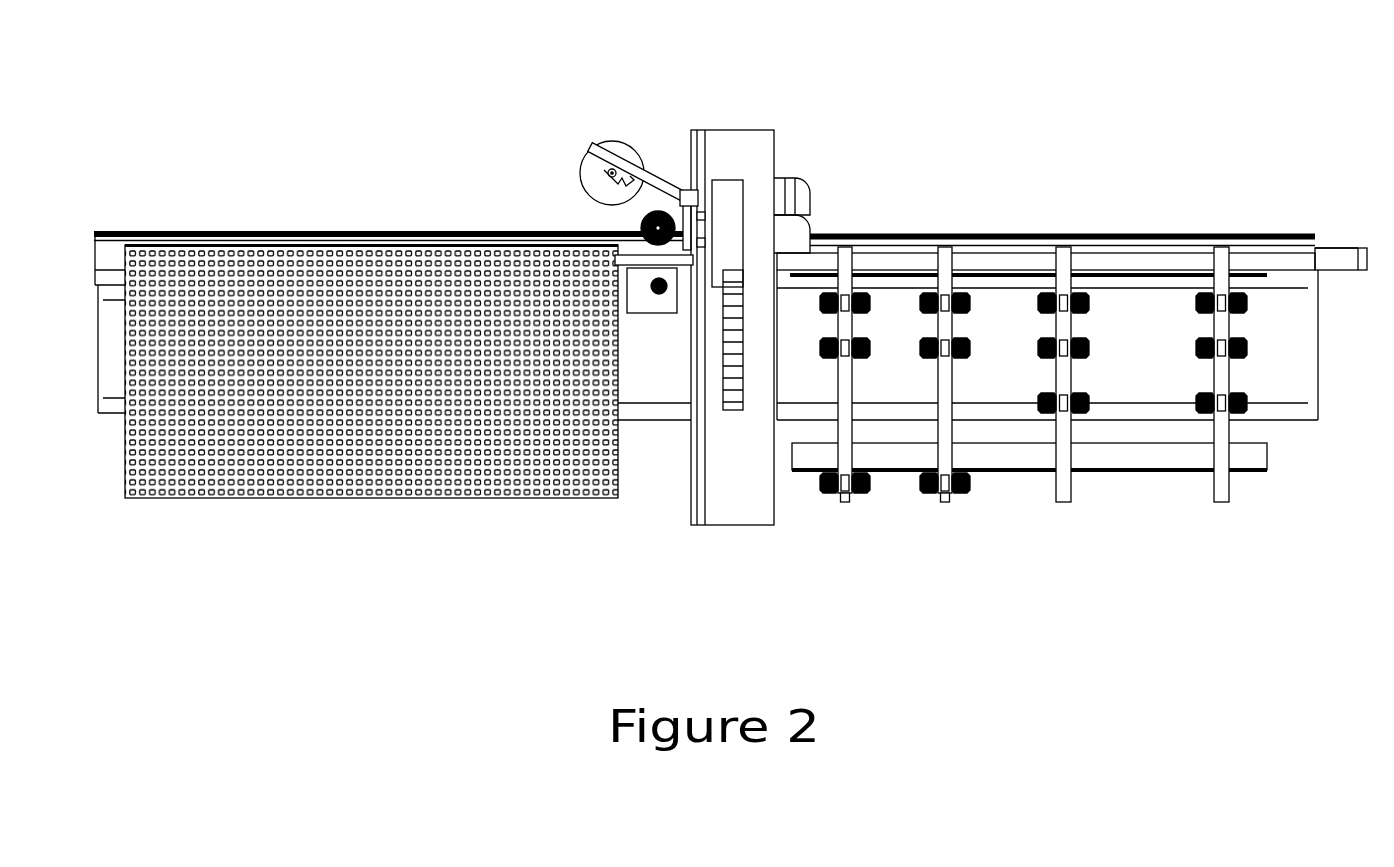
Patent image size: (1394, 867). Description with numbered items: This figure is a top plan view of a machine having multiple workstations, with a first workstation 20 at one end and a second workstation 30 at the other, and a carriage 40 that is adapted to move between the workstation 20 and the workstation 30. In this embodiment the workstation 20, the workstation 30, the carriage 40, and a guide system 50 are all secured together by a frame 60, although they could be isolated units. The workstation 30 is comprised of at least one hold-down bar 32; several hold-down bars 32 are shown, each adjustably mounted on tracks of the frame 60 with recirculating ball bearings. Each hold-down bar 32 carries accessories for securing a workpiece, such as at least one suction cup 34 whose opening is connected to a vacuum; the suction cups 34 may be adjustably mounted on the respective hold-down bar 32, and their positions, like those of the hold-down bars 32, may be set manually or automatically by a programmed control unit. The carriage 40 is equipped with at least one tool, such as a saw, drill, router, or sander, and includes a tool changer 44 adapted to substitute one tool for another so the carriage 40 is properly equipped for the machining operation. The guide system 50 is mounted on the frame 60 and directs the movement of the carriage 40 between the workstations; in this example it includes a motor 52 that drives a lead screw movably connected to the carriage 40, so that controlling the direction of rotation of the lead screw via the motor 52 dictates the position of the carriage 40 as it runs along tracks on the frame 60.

The first workstation 20 is at (271, 497).
The second workstation 30 is at (1065, 514).
The hold-down bar 32 is at (848, 505).
The suction cup 34 is at (968, 302).
The carriage 40 is at (737, 537).
The tool changer 44 is at (578, 163).
The guide system 50 is at (1340, 238).
The motor 52 is at (1335, 270).
The frame 60 is at (655, 420).